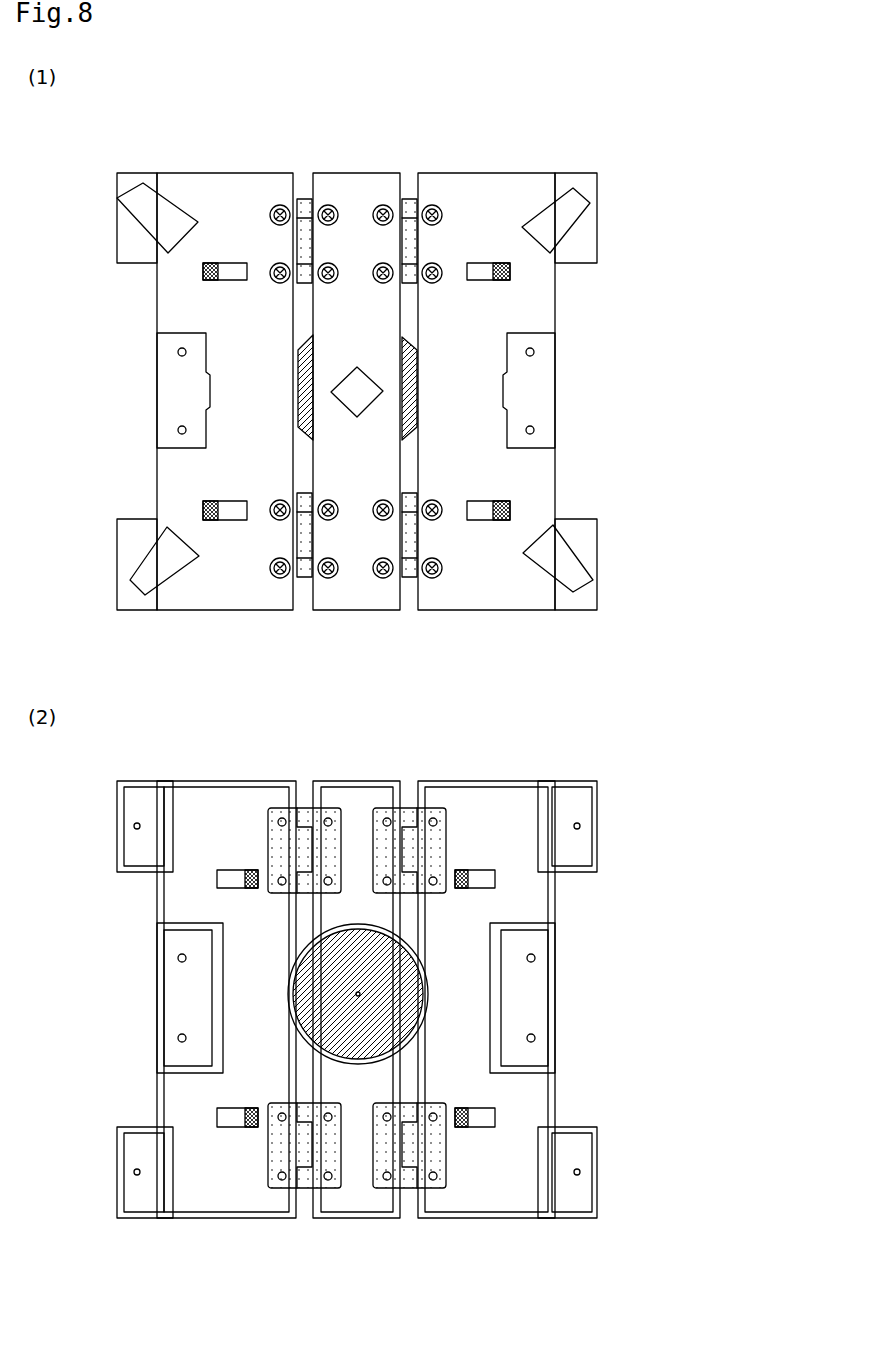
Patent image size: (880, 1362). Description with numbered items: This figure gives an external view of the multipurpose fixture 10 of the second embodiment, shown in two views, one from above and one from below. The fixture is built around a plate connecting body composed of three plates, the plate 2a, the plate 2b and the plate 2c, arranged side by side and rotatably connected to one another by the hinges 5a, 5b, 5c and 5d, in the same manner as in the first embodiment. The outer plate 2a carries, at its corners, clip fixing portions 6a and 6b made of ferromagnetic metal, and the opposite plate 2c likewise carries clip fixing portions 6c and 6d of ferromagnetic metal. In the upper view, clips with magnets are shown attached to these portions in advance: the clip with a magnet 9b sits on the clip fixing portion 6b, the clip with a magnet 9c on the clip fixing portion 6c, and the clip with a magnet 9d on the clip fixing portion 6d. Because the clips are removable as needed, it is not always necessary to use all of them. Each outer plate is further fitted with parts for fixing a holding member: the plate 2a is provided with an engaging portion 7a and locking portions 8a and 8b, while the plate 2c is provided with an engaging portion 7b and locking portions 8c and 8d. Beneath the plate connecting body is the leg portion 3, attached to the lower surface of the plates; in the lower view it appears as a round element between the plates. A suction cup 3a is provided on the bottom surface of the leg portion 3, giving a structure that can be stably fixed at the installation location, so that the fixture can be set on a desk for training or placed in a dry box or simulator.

The multipurpose fixture 10 is at (684, 158).
The plate 2a is at (182, 192).
The plate 2b is at (355, 190).
The plate 2c is at (531, 190).
The leg portion 3 is at (408, 416).
The suction cup 3a is at (340, 1025).
The hinge 5a is at (301, 200).
The hinge 5b is at (302, 578).
The hinge 5c is at (409, 200).
The hinge 5d is at (410, 578).
The clip fixing portion 6a is at (132, 247).
The clip fixing portion 6b is at (137, 548).
The clip fixing portion 6c is at (583, 240).
The clip fixing portion 6d is at (575, 548).
The engaging portion 7a is at (180, 384).
The engaging portion 7b is at (530, 375).
The locking portion 8a is at (242, 268).
The locking portion 8b is at (235, 512).
The locking portion 8c is at (483, 265).
The locking portion 8d is at (483, 512).
The clip with a magnet 9b is at (136, 200).
The clip with a magnet 9c is at (600, 196).
The clip with a magnet 9d is at (575, 580).